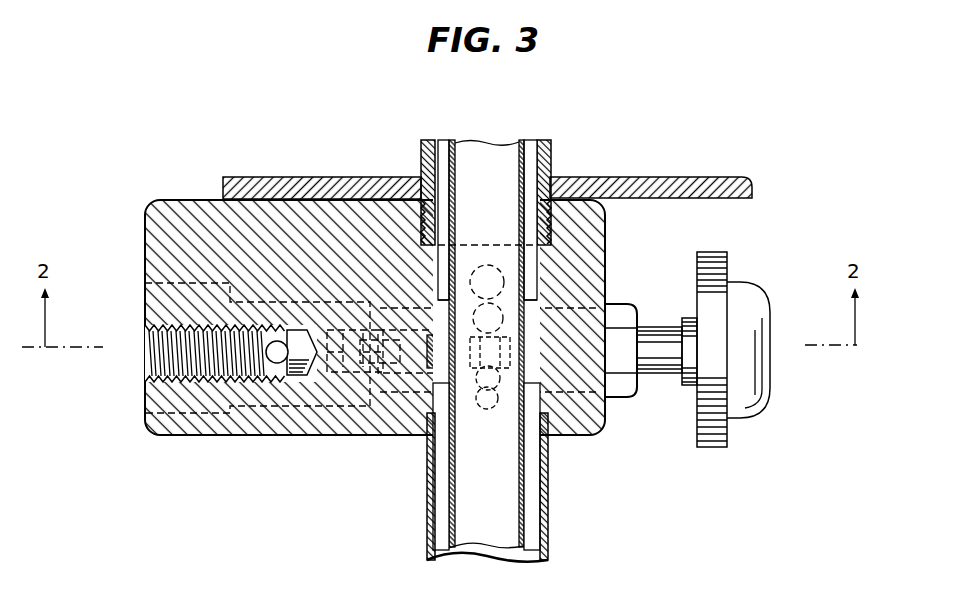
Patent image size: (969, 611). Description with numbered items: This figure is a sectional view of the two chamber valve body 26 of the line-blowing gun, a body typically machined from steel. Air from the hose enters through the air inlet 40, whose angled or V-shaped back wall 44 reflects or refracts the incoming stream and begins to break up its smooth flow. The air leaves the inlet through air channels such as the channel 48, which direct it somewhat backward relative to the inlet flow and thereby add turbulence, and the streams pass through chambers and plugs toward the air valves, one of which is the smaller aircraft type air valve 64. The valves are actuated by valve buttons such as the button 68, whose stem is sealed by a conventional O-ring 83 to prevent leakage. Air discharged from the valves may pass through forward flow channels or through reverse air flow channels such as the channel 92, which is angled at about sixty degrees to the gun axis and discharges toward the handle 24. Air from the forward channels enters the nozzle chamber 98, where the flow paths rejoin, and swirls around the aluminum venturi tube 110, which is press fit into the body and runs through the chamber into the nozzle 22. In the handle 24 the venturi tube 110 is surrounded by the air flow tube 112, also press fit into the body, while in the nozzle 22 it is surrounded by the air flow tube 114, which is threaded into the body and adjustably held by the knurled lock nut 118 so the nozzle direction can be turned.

The nozzle 22 is at (578, 142).
The handle 24 is at (569, 530).
The valve body 26 is at (162, 200).
The air inlet 40 is at (133, 347).
The angled or V-shaped back wall 44 is at (315, 337).
The air channel 48 is at (277, 362).
The air valve 64 is at (388, 365).
The valve button 68 is at (786, 379).
The O-ring 83 is at (489, 265).
The reverse air flow channel 92 is at (487, 410).
The nozzle chamber 98 is at (533, 263).
The venturi tube 110 is at (453, 170).
The air flow tube 112 is at (427, 503).
The air flow tube 114 is at (540, 143).
The knurled lock nut 118 is at (670, 176).